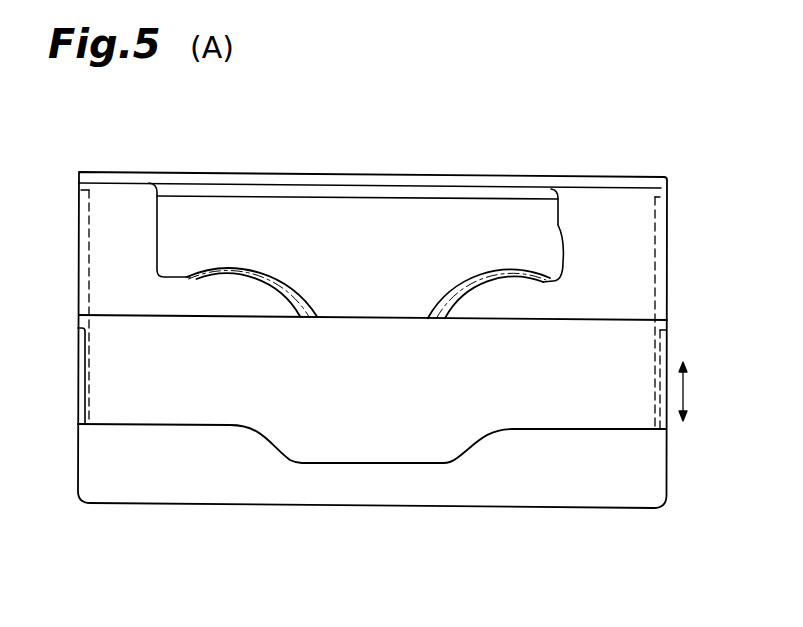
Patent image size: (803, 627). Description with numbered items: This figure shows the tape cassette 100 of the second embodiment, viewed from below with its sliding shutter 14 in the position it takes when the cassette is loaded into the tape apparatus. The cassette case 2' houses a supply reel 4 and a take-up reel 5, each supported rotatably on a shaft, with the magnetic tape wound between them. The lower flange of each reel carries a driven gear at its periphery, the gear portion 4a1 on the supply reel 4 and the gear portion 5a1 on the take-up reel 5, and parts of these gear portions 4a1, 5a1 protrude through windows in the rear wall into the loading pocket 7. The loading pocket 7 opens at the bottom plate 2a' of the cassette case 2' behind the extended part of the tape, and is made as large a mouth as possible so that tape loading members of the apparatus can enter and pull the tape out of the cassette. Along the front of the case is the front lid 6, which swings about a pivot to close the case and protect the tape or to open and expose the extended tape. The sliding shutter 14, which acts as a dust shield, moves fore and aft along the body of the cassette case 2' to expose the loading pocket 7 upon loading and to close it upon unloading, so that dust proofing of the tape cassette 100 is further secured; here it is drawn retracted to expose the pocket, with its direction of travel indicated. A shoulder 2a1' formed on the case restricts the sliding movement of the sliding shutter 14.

The tape cassette 100 is at (29, 143).
The front lid 6 is at (194, 183).
The loading pocket 7 is at (428, 228).
The take-up reel 5 is at (240, 267).
The gear portion 5a1 is at (288, 286).
The supply reel 4 is at (528, 267).
The gear portion 4a1 is at (476, 273).
The sliding shutter 14 is at (613, 363).
The cassette case 2' is at (372, 493).
The bottom plate 2a' is at (396, 515).
The shoulder 2a1' is at (589, 493).